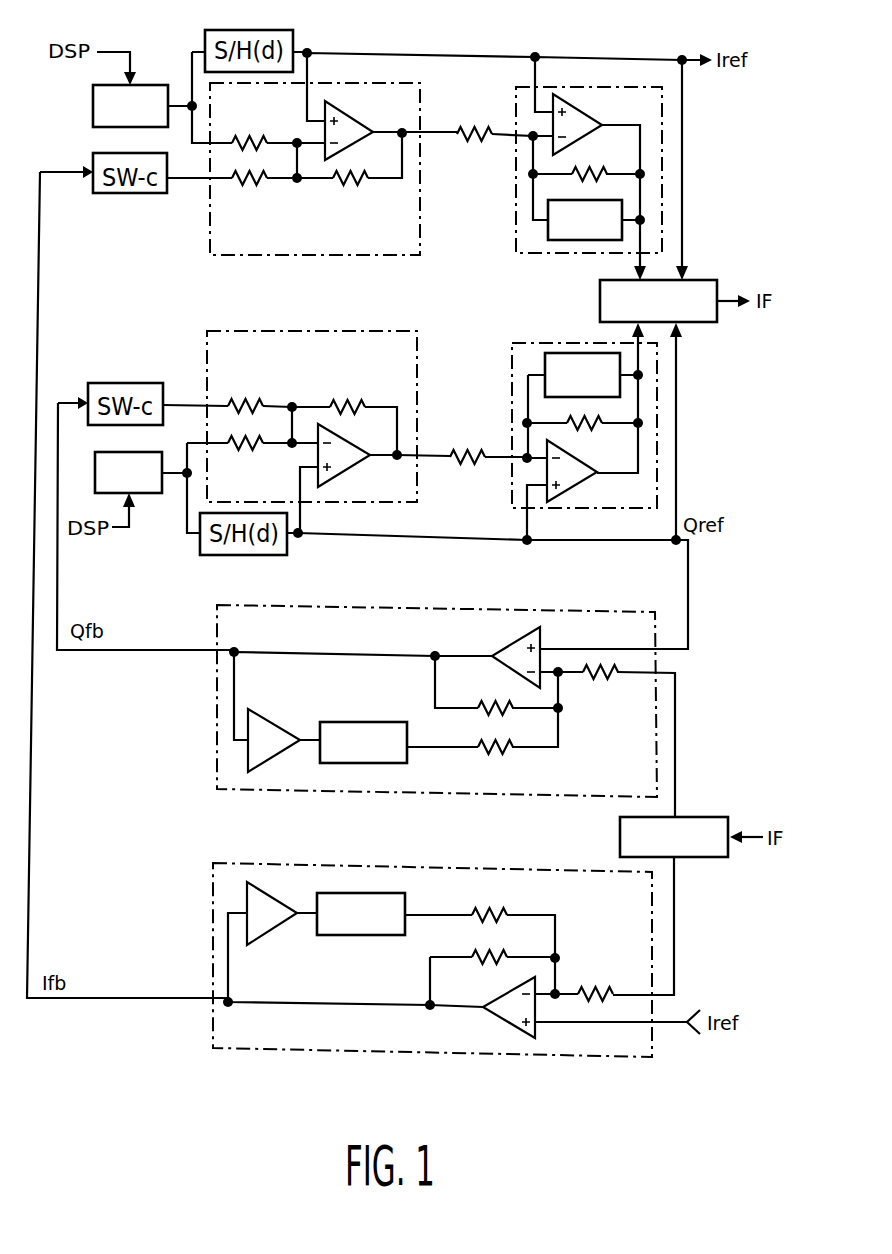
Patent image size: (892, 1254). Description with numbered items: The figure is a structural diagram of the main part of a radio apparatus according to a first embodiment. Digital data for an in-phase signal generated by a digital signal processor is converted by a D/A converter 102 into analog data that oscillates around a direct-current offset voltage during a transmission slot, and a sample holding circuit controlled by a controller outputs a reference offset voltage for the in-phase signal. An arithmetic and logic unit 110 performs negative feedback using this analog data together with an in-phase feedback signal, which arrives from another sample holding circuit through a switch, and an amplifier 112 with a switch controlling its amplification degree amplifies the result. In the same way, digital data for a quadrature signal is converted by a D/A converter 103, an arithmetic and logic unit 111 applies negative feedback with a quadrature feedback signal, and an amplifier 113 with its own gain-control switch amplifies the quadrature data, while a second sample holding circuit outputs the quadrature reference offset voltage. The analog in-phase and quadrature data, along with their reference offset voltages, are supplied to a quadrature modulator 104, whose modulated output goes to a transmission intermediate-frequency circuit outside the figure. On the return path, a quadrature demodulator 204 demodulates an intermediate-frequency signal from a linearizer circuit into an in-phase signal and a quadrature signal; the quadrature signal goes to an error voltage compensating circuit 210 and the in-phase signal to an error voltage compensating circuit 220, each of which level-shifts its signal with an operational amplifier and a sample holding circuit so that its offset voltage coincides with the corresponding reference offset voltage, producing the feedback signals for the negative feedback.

The D/A converter 102 is at (150, 83).
The D/A converter 103 is at (140, 495).
The quadrature modulator 104 is at (697, 280).
The arithmetic and logic unit 110 is at (240, 255).
The arithmetic and logic unit 111 is at (276, 331).
The amplifier 112 is at (545, 253).
The amplifier 113 is at (511, 368).
The quadrature demodulator 204 is at (695, 817).
The error voltage compensating circuit 210 is at (347, 606).
The error voltage compensating circuit 220 is at (455, 1057).